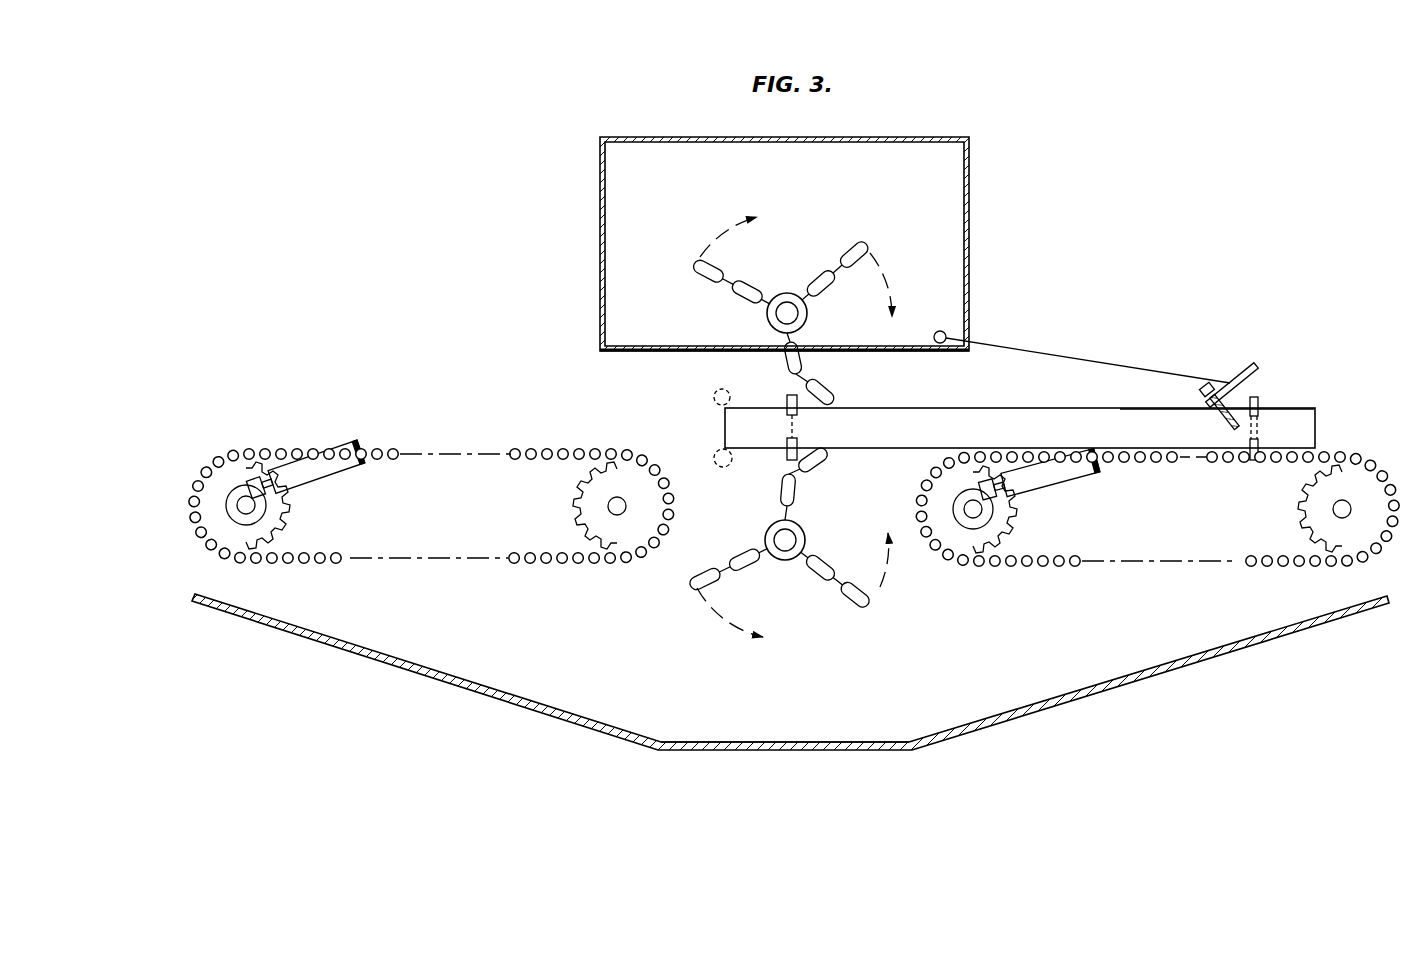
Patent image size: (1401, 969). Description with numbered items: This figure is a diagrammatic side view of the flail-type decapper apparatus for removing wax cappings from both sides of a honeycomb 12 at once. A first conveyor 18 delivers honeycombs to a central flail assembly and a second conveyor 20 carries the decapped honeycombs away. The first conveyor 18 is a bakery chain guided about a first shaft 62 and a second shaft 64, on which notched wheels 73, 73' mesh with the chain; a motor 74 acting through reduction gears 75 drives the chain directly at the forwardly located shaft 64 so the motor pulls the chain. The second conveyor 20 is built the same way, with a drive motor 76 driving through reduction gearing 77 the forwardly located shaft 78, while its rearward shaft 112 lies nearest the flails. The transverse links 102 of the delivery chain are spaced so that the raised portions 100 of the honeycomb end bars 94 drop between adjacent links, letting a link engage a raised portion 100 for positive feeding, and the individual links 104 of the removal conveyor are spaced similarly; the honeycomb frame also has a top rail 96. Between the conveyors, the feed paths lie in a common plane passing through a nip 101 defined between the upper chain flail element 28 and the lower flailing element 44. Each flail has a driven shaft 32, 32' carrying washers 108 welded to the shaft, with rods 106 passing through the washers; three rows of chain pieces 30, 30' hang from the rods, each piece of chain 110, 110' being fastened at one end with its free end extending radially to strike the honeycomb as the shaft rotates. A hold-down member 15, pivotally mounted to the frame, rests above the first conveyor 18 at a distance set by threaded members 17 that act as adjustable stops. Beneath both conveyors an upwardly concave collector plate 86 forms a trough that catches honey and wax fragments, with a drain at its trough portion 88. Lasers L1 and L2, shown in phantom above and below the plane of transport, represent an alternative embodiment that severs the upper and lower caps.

The honeycomb 12 is at (945, 418).
The hold-down member 15 is at (1257, 373).
The threaded members 17 is at (1238, 408).
The first conveyor 18 is at (1243, 568).
The second conveyor 20 is at (528, 566).
The upper chain flail element 28 is at (742, 304).
The chain pieces 30 is at (780, 267).
The chain pieces 30' is at (780, 576).
The driven shaft 32 is at (816, 323).
The driven shaft 32' is at (812, 534).
The lower flailing element 44 is at (762, 527).
The first shaft 62 is at (1342, 509).
The second shaft 64 is at (977, 512).
The notched wheel 73 is at (1297, 575).
The notched wheel 73' is at (972, 581).
The motor 74 is at (1070, 468).
The reduction gears 75 is at (978, 489).
The drive motor 76 is at (340, 458).
The reduction gearing 77 is at (246, 485).
The forwardly located shaft 78 is at (250, 508).
The collector plate 86 is at (377, 660).
The trough portion 88 is at (712, 742).
The end bars 94 is at (790, 428).
The top rail 96 is at (1120, 428).
The raised portions 100 is at (785, 459).
The nip 101 is at (822, 423).
The transverse links 102 is at (1233, 464).
The individual links 104 is at (530, 461).
The rod 106 is at (808, 313).
The washers 108 is at (783, 294).
The piece of chain 110 is at (837, 370).
The piece of chain 110' is at (830, 482).
The rearward shaft 112 is at (617, 507).
The laser L1 is at (714, 397).
The laser L2 is at (714, 456).